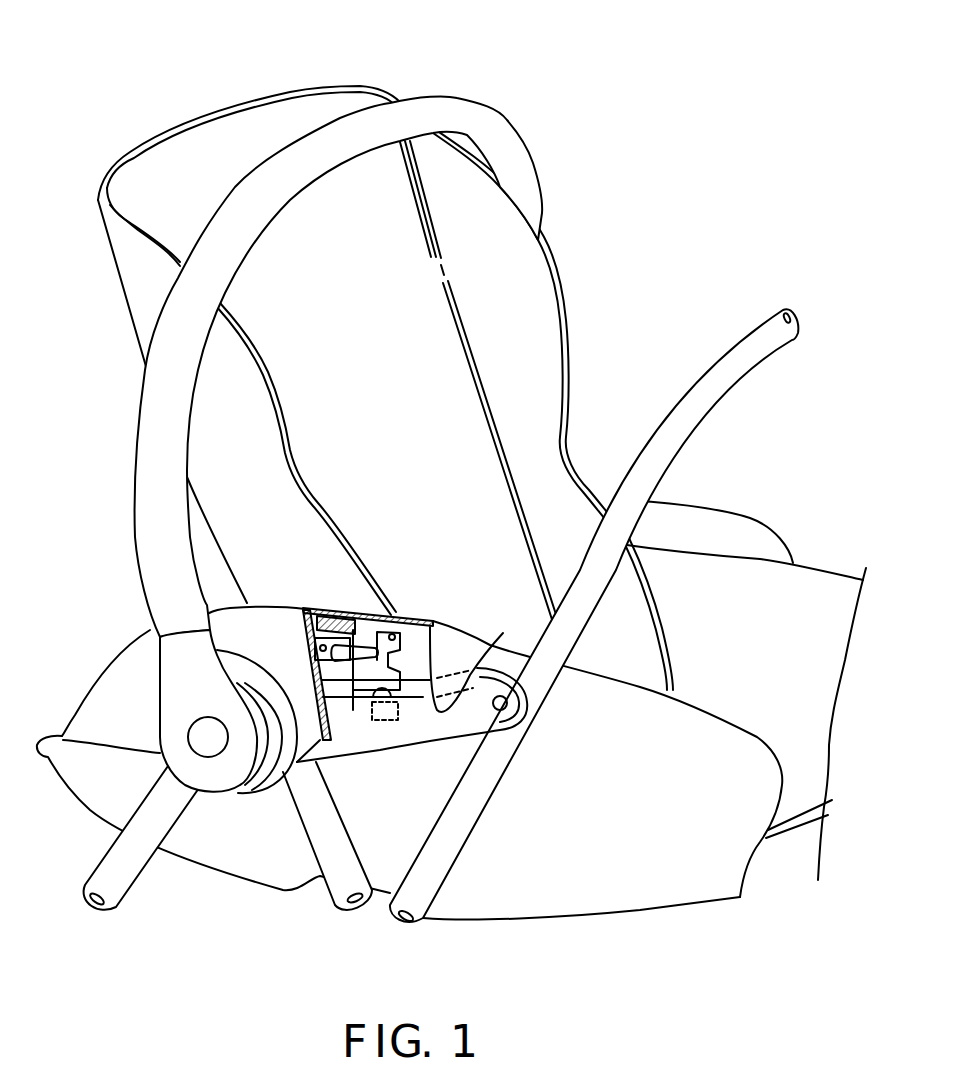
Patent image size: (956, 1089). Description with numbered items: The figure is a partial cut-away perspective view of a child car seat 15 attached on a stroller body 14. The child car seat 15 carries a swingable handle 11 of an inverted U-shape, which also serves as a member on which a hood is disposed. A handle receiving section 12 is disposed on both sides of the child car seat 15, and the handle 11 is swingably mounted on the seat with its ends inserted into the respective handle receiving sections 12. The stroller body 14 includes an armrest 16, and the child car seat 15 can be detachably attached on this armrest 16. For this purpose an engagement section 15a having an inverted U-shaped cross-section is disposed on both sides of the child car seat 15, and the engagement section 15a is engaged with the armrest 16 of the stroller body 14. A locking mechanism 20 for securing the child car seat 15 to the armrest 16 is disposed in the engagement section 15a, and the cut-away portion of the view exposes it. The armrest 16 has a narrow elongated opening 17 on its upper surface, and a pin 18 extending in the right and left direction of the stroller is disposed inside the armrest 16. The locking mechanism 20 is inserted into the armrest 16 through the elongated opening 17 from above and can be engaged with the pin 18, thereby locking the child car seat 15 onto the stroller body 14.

The handle 11 is at (515, 143).
The handle receiving section 12 is at (212, 773).
The stroller body 14 is at (307, 820).
The child car seat 15 is at (553, 317).
The engagement section 15a is at (268, 627).
The armrest 16 is at (427, 728).
The elongated opening 17 is at (397, 710).
The pin 18 is at (373, 720).
The locking mechanism 20 is at (398, 653).